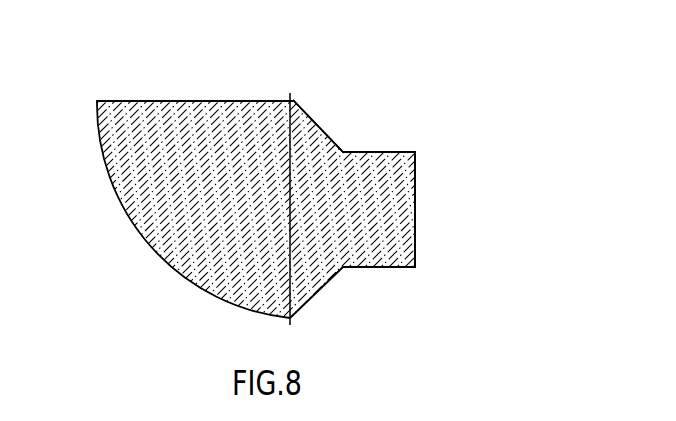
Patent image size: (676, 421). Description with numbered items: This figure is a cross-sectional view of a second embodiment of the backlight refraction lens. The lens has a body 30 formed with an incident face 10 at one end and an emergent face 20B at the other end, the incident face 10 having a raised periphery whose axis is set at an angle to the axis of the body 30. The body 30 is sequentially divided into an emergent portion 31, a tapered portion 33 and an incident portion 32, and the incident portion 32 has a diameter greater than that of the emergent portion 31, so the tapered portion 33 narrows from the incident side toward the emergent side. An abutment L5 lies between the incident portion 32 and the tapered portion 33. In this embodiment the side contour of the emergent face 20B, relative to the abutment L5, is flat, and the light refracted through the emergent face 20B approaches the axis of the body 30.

The incident face 10 is at (124, 214).
The body 30 is at (362, 47).
The emergent portion 31 is at (377, 151).
The incident portion 32 is at (277, 100).
The tapered portion 33 is at (318, 126).
The abutment L5 is at (293, 265).
The emergent face 20B is at (430, 222).